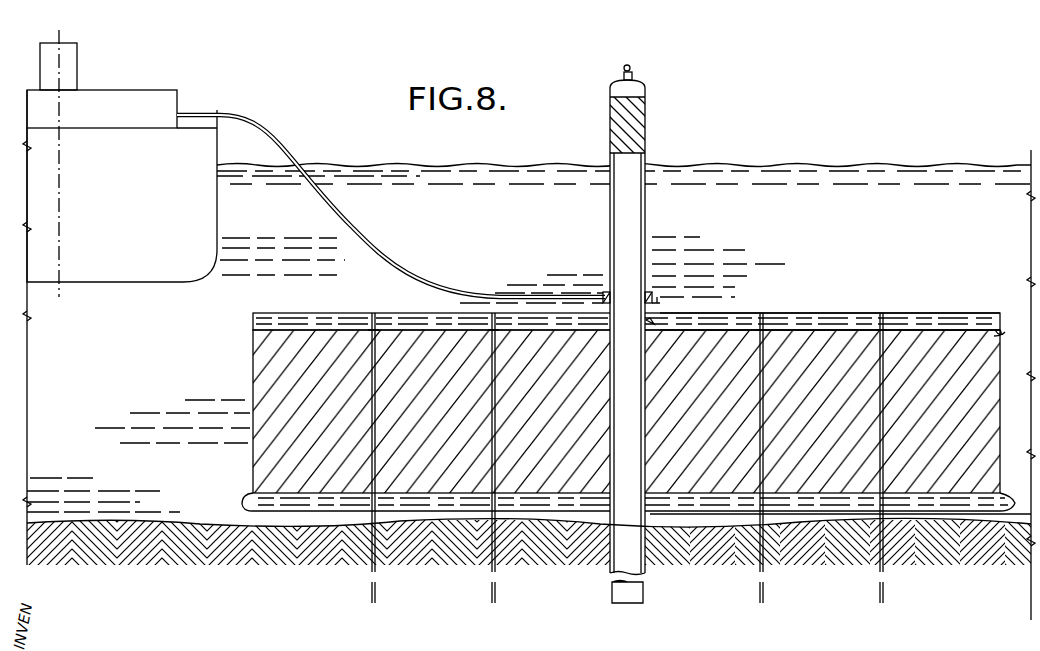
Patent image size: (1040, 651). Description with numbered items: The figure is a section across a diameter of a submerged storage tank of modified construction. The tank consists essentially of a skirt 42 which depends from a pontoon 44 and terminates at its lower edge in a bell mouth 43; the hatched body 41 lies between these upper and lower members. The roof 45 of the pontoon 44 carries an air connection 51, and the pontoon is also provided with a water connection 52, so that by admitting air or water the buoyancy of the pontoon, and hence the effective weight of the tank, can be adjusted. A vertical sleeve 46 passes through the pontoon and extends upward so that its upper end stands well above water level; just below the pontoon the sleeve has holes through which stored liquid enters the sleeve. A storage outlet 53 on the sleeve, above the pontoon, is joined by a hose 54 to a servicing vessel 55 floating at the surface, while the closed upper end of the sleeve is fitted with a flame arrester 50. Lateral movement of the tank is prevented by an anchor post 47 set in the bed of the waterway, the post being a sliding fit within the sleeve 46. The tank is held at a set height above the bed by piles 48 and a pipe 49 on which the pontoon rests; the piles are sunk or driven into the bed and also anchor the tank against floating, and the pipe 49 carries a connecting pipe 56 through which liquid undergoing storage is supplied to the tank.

The hatched buoyant tank body 41 is at (260, 380).
The skirt 42 is at (253, 349).
The bell mouth 43 is at (243, 505).
The pontoon 44 is at (837, 320).
The roof 45 is at (788, 309).
The vertical sleeve 46 is at (652, 321).
The anchor post 47 is at (622, 200).
The piles 48 is at (371, 590).
The pipe 49 is at (758, 569).
The flame arrester 50 is at (634, 75).
The air connection 51 is at (658, 302).
The water connection 52 is at (1006, 322).
The storage outlet 53 is at (602, 295).
The hose 54 is at (251, 126).
The servicing vessel 55 is at (181, 142).
The connecting pipe 56 is at (850, 515).